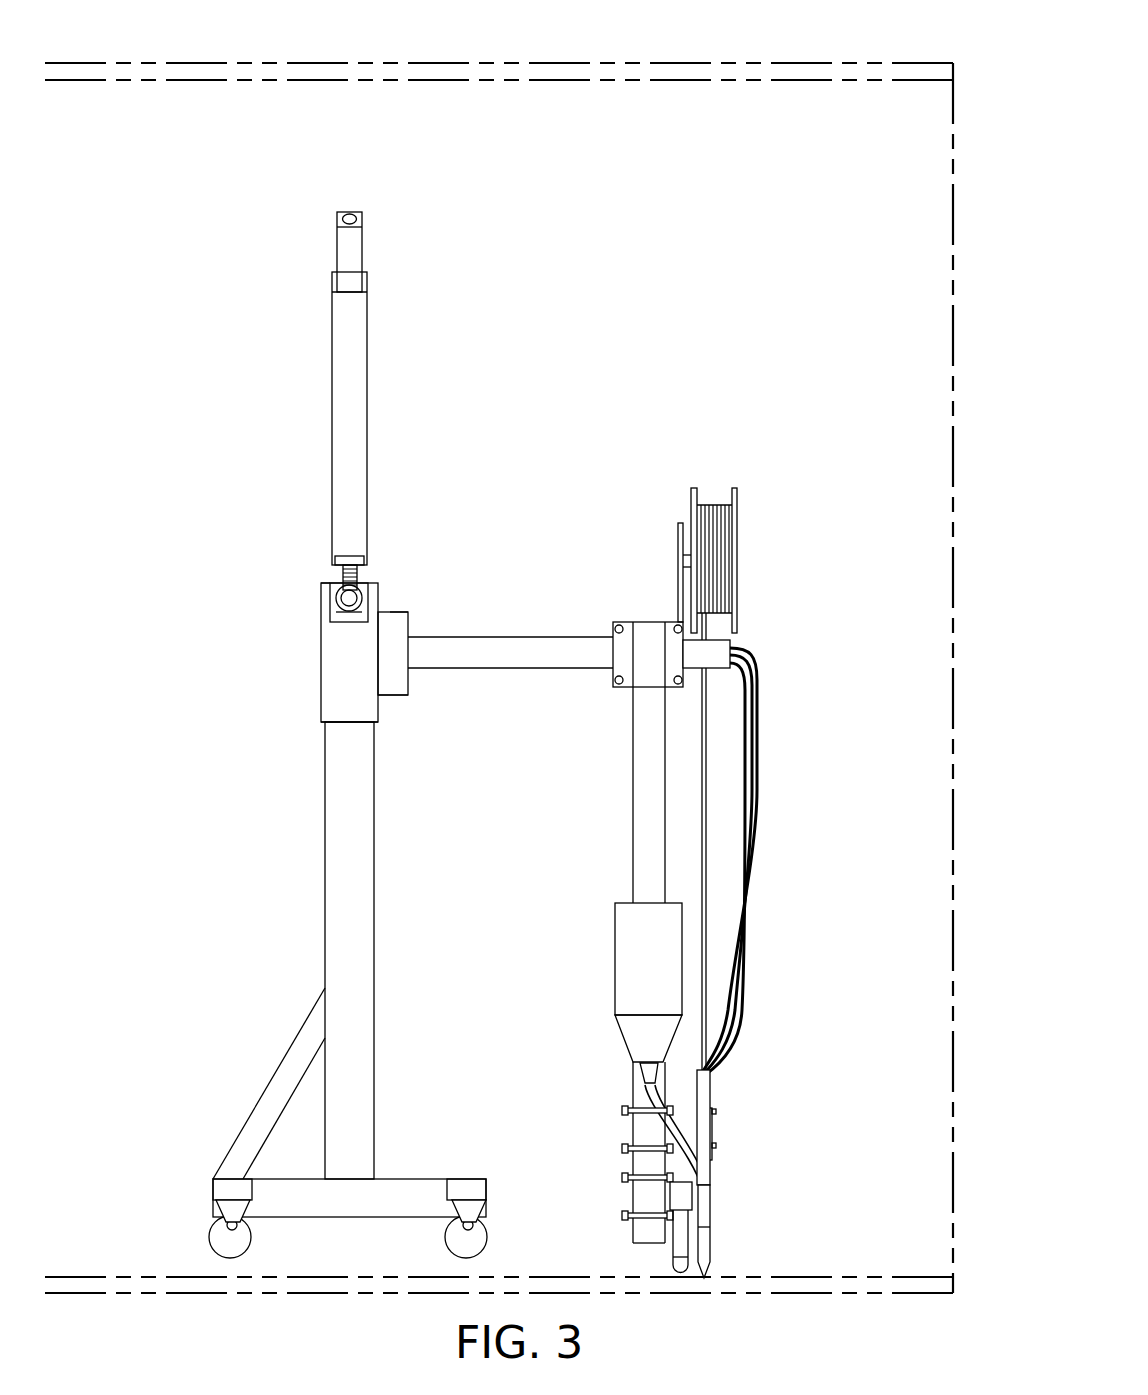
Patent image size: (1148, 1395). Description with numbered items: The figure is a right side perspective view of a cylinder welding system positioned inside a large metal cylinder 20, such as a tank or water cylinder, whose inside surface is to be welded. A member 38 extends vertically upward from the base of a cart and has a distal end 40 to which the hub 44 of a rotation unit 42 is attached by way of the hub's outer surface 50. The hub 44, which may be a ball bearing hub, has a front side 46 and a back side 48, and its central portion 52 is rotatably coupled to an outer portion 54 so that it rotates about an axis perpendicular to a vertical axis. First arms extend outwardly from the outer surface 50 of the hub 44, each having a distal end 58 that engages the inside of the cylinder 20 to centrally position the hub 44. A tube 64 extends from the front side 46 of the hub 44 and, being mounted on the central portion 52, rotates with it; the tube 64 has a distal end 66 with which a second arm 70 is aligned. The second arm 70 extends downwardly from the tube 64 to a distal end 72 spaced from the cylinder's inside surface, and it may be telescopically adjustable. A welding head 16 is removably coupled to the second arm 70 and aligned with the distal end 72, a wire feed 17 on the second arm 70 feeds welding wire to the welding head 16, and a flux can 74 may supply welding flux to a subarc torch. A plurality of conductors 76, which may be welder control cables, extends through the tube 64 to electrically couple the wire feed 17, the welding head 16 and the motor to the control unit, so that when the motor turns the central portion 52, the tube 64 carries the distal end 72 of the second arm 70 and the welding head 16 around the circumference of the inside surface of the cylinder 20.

The welding head 16 is at (752, 1216).
The wire feed 17 is at (737, 493).
The cylinder 20 is at (788, 63).
The member 38 is at (325, 838).
The distal end 40 is at (345, 722).
The rotation unit 42 is at (510, 573).
The hub 44 is at (380, 582).
The front side 46 is at (321, 662).
The back side 48 is at (408, 670).
The outer surface 50 is at (338, 665).
The central portion 52 is at (408, 590).
The outer portion 54 is at (320, 560).
The distal end 58 is at (349, 212).
The tube 64 is at (565, 637).
The distal end 66 is at (730, 640).
The second arm 70 is at (633, 775).
The distal end 72 is at (640, 1243).
The flux can 74 is at (615, 948).
The conductors 76 is at (757, 800).